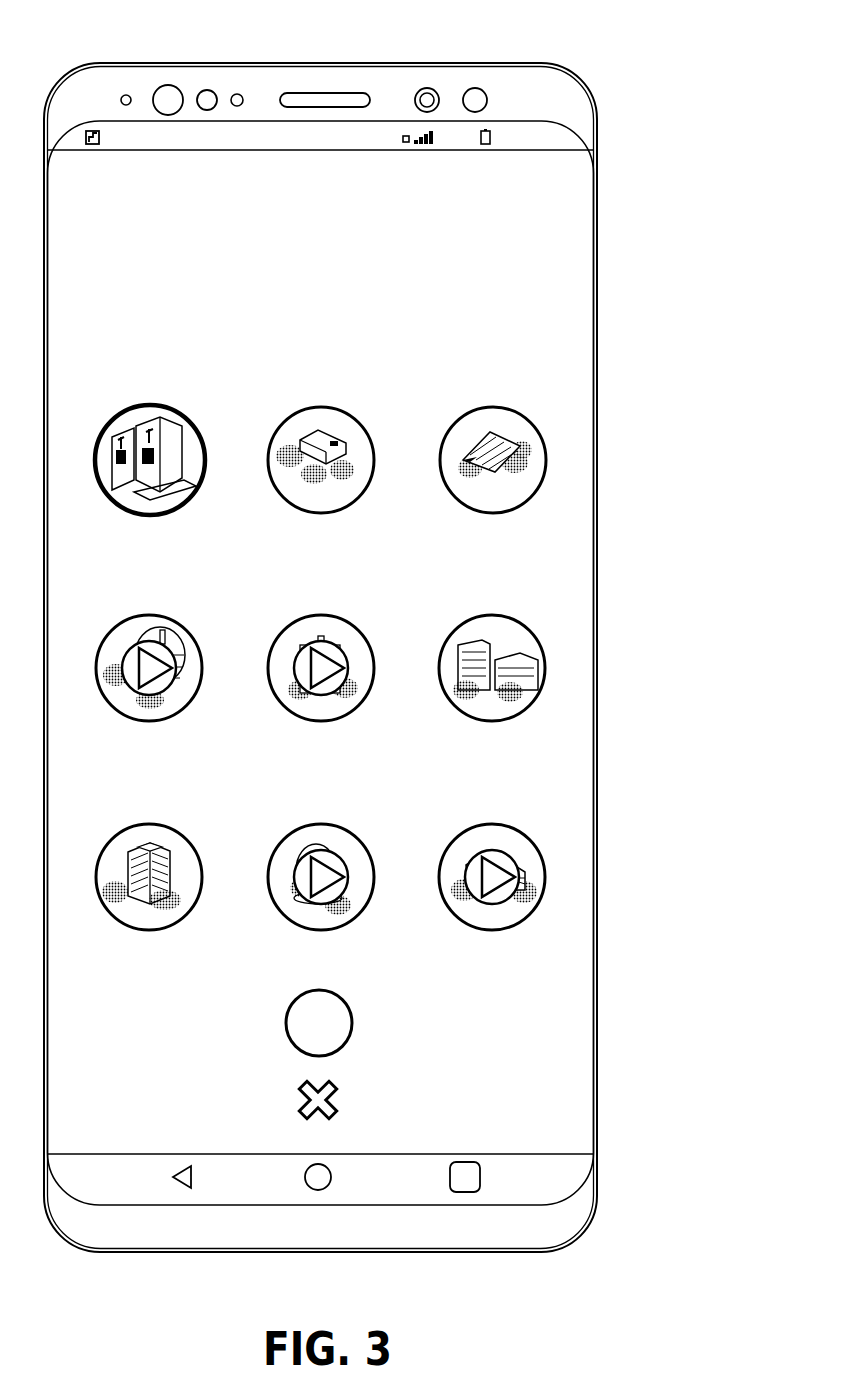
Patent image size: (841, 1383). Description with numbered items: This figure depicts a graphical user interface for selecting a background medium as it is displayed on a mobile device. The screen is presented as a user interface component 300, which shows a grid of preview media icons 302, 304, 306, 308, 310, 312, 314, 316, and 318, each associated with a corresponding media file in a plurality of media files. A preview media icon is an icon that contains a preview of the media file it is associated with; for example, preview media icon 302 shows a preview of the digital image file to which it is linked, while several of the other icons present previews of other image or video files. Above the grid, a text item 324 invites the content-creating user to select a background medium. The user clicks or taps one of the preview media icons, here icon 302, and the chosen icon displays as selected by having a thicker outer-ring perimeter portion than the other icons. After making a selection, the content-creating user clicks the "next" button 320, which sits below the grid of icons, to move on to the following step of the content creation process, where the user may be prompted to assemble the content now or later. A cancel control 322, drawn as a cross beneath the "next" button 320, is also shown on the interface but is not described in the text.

The user interface component 300 is at (630, 36).
The preview media icon 302 is at (192, 425).
The preview media icon 304 is at (362, 426).
The preview media icon 306 is at (500, 407).
The preview media icon 308 is at (148, 613).
The preview media icon 310 is at (323, 613).
The preview media icon 312 is at (493, 613).
The preview media icon 314 is at (148, 822).
The preview media icon 316 is at (323, 822).
The preview media icon 318 is at (493, 822).
The next button 320 is at (352, 1022).
The cancel button 322 is at (338, 1105).
The text item 324 is at (393, 338).